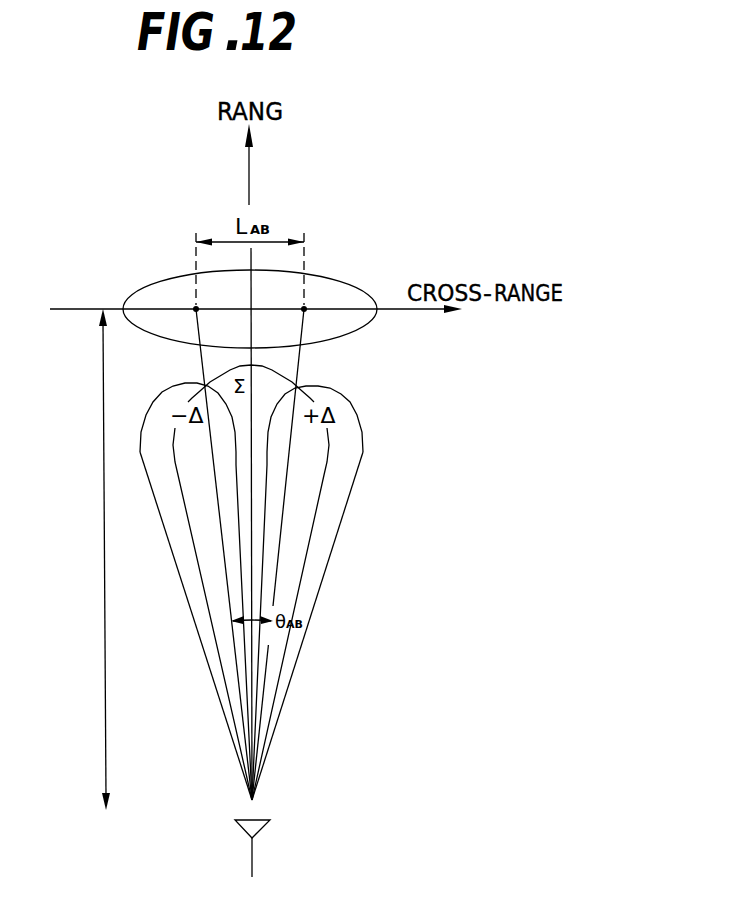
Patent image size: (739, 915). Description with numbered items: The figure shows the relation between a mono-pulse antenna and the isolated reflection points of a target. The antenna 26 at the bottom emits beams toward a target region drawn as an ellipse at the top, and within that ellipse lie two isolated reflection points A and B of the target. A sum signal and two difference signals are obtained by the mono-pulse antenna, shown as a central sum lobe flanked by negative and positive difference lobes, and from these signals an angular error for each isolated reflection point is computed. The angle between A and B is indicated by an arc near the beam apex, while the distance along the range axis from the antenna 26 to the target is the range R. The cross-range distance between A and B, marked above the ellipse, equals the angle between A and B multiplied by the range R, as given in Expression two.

The antenna 26 is at (268, 821).
The isolated reflection point A is at (222, 540).
The isolated reflection point B is at (290, 540).
The range R is at (93, 559).